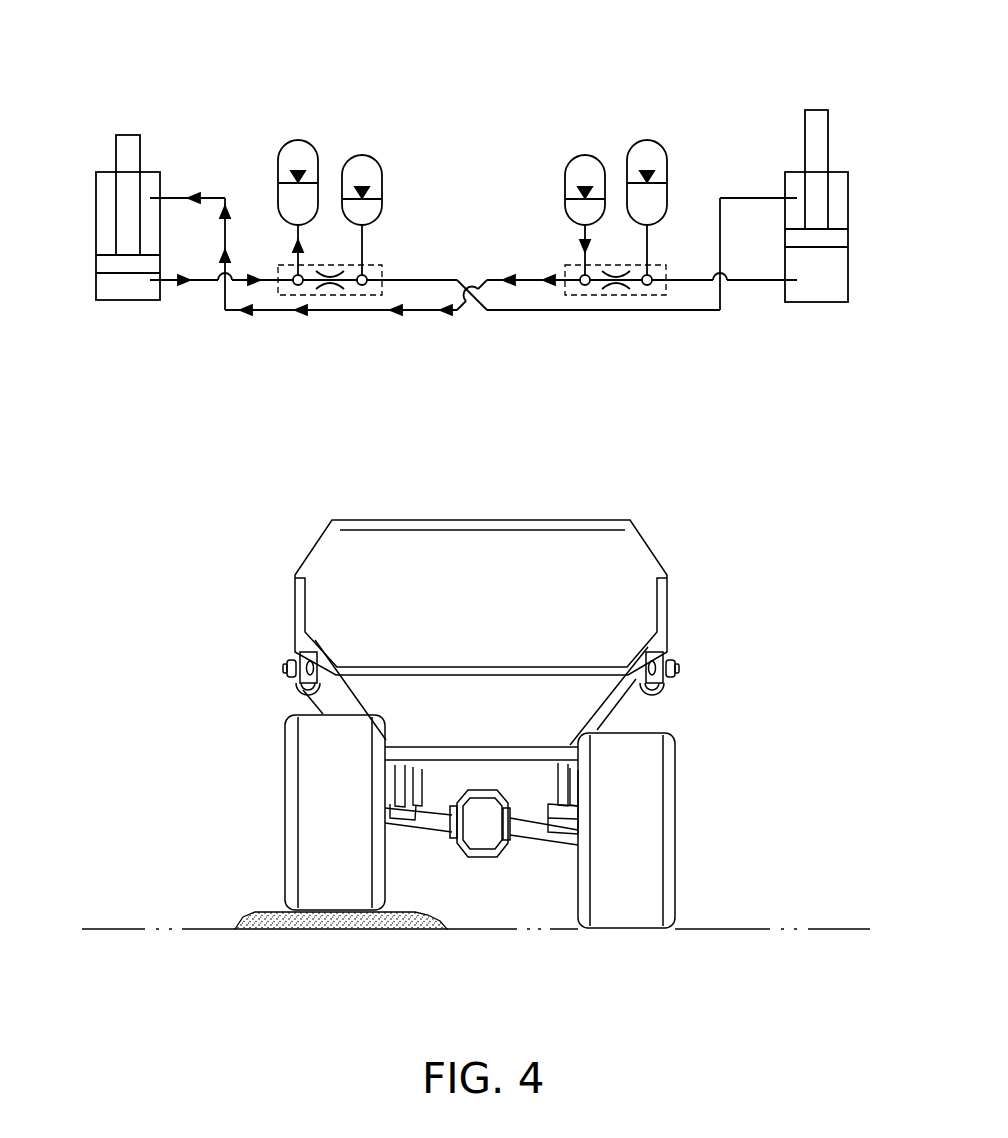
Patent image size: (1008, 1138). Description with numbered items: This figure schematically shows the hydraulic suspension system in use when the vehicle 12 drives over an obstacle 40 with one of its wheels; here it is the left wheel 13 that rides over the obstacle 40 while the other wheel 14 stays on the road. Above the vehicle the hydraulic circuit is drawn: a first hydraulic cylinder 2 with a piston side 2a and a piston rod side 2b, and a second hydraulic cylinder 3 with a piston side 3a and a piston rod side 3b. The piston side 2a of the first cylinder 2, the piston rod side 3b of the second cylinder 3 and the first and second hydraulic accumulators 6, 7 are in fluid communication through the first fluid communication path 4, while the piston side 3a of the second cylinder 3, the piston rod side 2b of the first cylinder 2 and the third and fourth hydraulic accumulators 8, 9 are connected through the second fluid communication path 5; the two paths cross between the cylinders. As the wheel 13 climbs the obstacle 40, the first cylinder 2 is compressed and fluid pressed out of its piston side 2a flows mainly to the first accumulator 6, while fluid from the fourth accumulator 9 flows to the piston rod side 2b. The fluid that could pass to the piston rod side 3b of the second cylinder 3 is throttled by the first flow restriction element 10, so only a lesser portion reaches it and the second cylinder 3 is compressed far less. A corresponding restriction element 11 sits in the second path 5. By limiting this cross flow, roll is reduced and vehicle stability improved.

The first hydraulic cylinder 2 is at (104, 95).
The piston side of first hydraulic cylinder 2a is at (125, 287).
The piston rod side of first hydraulic cylinder 2b is at (150, 183).
The second hydraulic cylinder 3 is at (839, 90).
The piston side of second hydraulic cylinder 3a is at (818, 287).
The piston rod side of second hydraulic cylinder 3b is at (795, 183).
The first fluid communication path 4 is at (210, 280).
The second fluid communication path 5 is at (270, 310).
The first hydraulic accumulator 6 is at (311, 113).
The second hydraulic accumulator 7 is at (376, 128).
The third hydraulic accumulator 8 is at (634, 112).
The fourth hydraulic accumulator 9 is at (568, 128).
The first flow restriction element 10 is at (332, 285).
The throttle valve unit 11 is at (612, 287).
The vehicle 12 is at (724, 545).
The left wheel 13 is at (285, 832).
The wheel 14 is at (677, 830).
The obstacle 40 is at (328, 915).